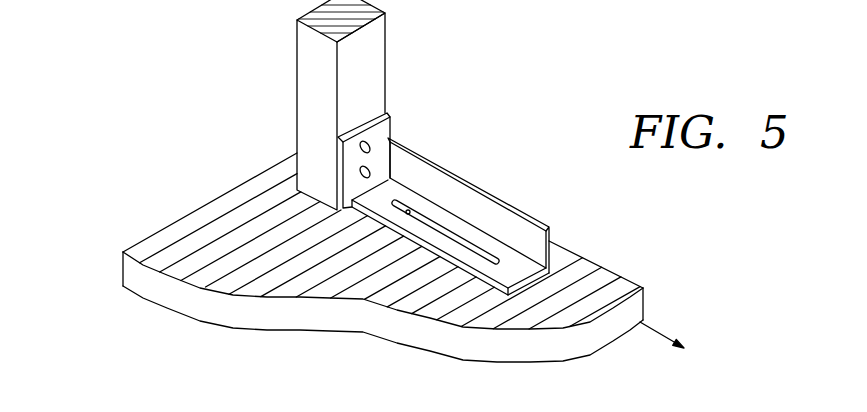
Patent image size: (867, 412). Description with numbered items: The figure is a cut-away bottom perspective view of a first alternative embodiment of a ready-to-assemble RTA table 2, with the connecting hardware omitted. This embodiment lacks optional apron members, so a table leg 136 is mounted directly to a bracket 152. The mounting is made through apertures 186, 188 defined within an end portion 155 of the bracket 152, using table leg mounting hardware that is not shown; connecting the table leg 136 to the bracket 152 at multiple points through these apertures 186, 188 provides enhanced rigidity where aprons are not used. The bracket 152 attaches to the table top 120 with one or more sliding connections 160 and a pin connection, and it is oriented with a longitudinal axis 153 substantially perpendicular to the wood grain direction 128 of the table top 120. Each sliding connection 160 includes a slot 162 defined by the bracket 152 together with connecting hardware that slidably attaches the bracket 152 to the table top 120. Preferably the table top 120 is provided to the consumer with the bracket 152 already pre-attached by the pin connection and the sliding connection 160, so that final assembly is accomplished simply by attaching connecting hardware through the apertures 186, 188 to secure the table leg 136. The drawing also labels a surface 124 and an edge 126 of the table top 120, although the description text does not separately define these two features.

The RTA table 2 is at (505, 110).
The table top 120 is at (207, 323).
The top surface of base 124 is at (223, 207).
The side edge of base 126 is at (120, 266).
The wood grain direction 128 is at (312, 286).
The table leg 136 is at (307, 56).
The bracket 152 is at (488, 210).
The longitudinal axis 153 is at (657, 331).
The end portion 155 is at (350, 155).
The sliding connection 160 is at (448, 222).
The slot 162 is at (408, 215).
The aperture 186 is at (369, 143).
The aperture 188 is at (370, 171).